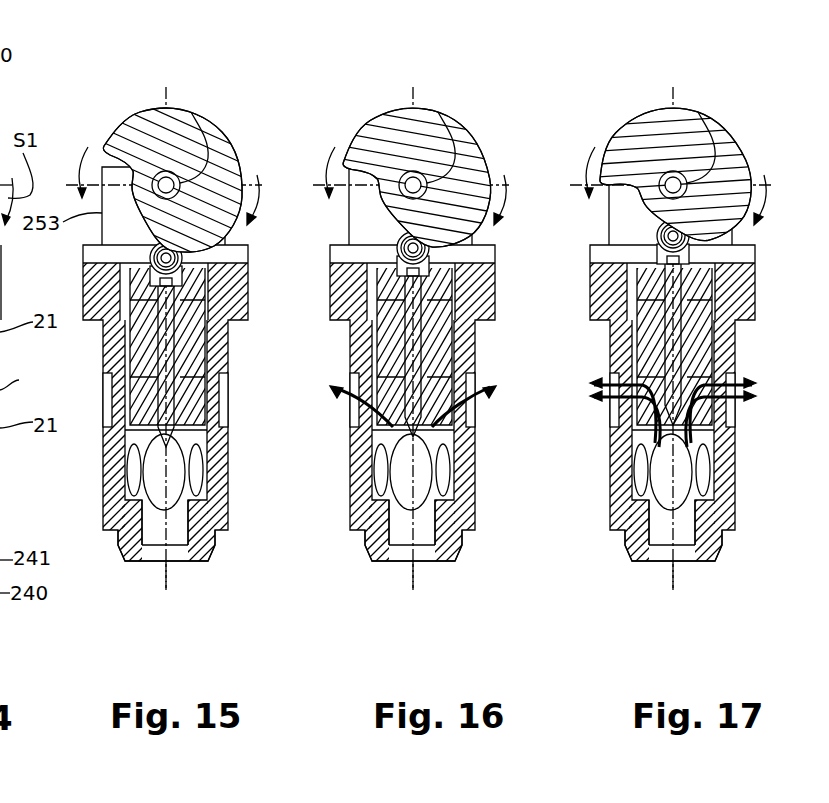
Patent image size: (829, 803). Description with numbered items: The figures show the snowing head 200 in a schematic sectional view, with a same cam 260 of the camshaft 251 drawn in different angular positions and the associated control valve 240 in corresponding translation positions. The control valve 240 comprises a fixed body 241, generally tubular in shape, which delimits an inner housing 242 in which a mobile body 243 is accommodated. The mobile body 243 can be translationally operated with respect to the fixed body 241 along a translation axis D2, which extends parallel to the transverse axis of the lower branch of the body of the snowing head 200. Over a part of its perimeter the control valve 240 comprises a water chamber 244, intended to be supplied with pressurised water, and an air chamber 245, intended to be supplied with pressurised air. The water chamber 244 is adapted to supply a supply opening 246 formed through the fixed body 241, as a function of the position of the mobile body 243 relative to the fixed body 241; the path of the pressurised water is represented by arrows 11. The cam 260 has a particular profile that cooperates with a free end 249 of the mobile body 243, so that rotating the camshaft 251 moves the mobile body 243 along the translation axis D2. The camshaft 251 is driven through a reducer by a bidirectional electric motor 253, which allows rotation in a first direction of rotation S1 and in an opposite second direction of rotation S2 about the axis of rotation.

In FIG. 15, the snowing head 200 is at (143, 103).
In FIG. 16, the snowing head 200 is at (411, 316).
In FIG. 17, the snowing head 200 is at (671, 316).
In FIG. 16, the arrows 11 is at (383, 415).
In FIG. 17, the arrows 11 is at (663, 394).
In FIG. 15, the control valve 240 is at (206, 571).
In FIG. 16, the control valve 240 is at (206, 571).
In FIG. 17, the control valve 240 is at (206, 571).
In FIG. 15, the fixed body 241 is at (205, 552).
In FIG. 16, the fixed body 241 is at (205, 552).
In FIG. 17, the fixed body 241 is at (205, 552).
In FIG. 15, the inner housing 242 is at (140, 277).
In FIG. 16, the inner housing 242 is at (349, 346).
In FIG. 17, the inner housing 242 is at (706, 443).
In FIG. 15, the mobile body 243 is at (152, 545).
In FIG. 16, the mobile body 243 is at (399, 563).
In FIG. 17, the mobile body 243 is at (661, 556).
In FIG. 15, the water chamber 244 is at (155, 467).
In FIG. 16, the water chamber 244 is at (362, 472).
In FIG. 17, the water chamber 244 is at (624, 472).
In FIG. 15, the air chamber 245 is at (138, 343).
In FIG. 16, the air chamber 245 is at (140, 344).
In FIG. 17, the air chamber 245 is at (543, 400).
In FIG. 15, the supply opening 246 is at (118, 397).
In FIG. 16, the supply opening 246 is at (461, 381).
In FIG. 17, the supply opening 246 is at (661, 417).
In FIG. 15, the free end 249 is at (151, 258).
In FIG. 16, the free end 249 is at (349, 249).
In FIG. 17, the free end 249 is at (613, 236).
In FIG. 15, the camshaft 251 is at (191, 112).
In FIG. 16, the camshaft 251 is at (446, 127).
In FIG. 17, the camshaft 251 is at (706, 127).
In FIG. 15, the electric motor 253 is at (102, 213).
In FIG. 16, the electric motor 253 is at (371, 206).
In FIG. 17, the electric motor 253 is at (625, 206).
In FIG. 15, the cam 260 is at (218, 137).
In FIG. 16, the cam 260 is at (422, 205).
In FIG. 17, the cam 260 is at (659, 210).
In FIG. 15, the first direction of rotation S1 is at (258, 200).
In FIG. 16, the first direction of rotation S1 is at (513, 176).
In FIG. 17, the first direction of rotation S1 is at (773, 176).
In FIG. 15, the second direction of rotation S2 is at (80, 167).
In FIG. 16, the second direction of rotation S2 is at (319, 144).
In FIG. 17, the second direction of rotation S2 is at (578, 144).
In FIG. 15, the translation axis D2 is at (167, 582).
In FIG. 16, the translation axis D2 is at (429, 616).
In FIG. 17, the translation axis D2 is at (689, 616).